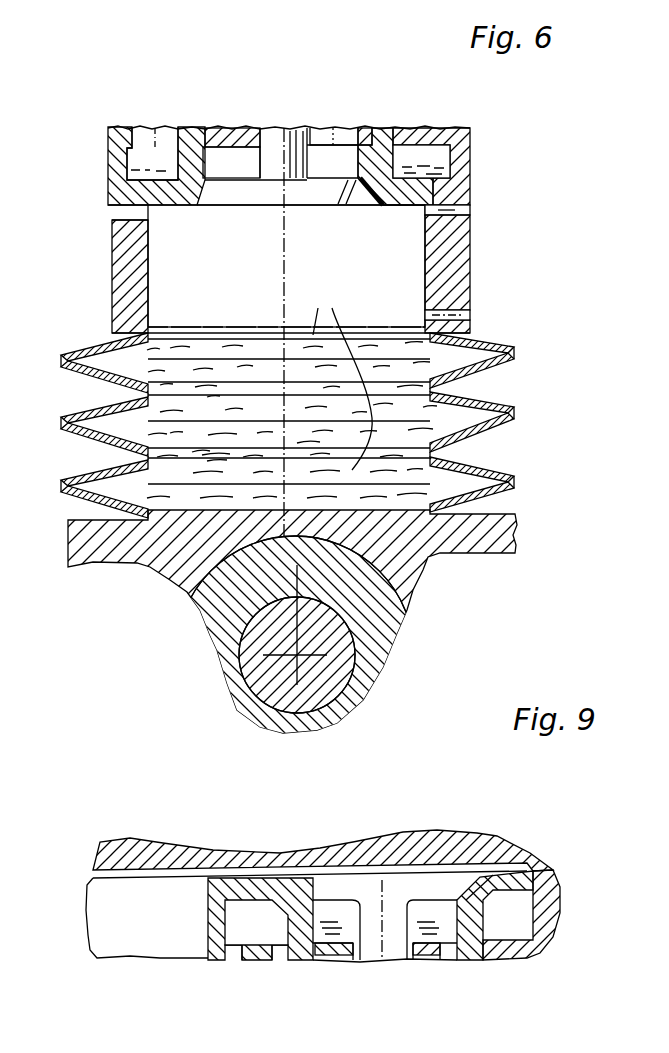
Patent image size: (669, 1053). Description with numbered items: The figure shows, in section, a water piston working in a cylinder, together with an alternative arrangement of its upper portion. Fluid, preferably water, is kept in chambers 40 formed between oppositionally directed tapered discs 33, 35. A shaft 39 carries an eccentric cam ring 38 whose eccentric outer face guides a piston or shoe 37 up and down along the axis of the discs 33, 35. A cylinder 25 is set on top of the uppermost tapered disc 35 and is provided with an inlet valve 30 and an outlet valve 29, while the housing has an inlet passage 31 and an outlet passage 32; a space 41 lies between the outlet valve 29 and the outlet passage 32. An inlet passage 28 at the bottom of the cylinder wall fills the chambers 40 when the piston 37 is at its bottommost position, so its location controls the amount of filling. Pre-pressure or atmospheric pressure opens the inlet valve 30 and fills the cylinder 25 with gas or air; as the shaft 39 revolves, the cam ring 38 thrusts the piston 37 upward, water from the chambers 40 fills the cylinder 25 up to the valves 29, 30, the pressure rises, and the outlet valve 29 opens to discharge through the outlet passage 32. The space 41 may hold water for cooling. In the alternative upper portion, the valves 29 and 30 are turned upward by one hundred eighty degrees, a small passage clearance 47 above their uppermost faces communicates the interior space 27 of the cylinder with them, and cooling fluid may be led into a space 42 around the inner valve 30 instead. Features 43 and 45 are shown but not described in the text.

In FIG. 6, the cylinder 25 is at (132, 258).
In FIG. 6, the interior space 27 is at (420, 267).
In FIG. 9, the interior space 27 is at (133, 916).
In FIG. 6, the inlet passage 28 is at (468, 315).
In FIG. 6, the outlet valve 29 is at (407, 205).
In FIG. 9, the outlet valve 29 is at (500, 885).
In FIG. 6, the inlet valve 30 is at (256, 205).
In FIG. 9, the inlet valve 30 is at (453, 880).
In FIG. 6, the inlet passage 31 is at (345, 133).
In FIG. 9, the inlet passage 31 is at (427, 960).
In FIG. 6, the outlet passage 32 is at (157, 127).
In FIG. 9, the outlet passage 32 is at (250, 961).
In FIG. 6, the tapered disc 33 is at (493, 365).
In FIG. 6, the tapered disc 35 is at (497, 402).
In FIG. 6, the piston 37 is at (507, 525).
In FIG. 6, the eccentric cam ring 38 is at (393, 620).
In FIG. 6, the shaft 39 is at (340, 673).
In FIG. 6, the chamber 40 is at (292, 390).
In FIG. 6, the space 41 is at (450, 153).
In FIG. 9, the space 41 is at (237, 933).
In FIG. 6, the space 42 is at (237, 158).
In FIG. 9, the space 42 is at (333, 935).
In FIG. 6, the gap 43 is at (112, 218).
In FIG. 6, the groove 45 is at (470, 210).
In FIG. 9, the passage clearance 47 is at (155, 877).